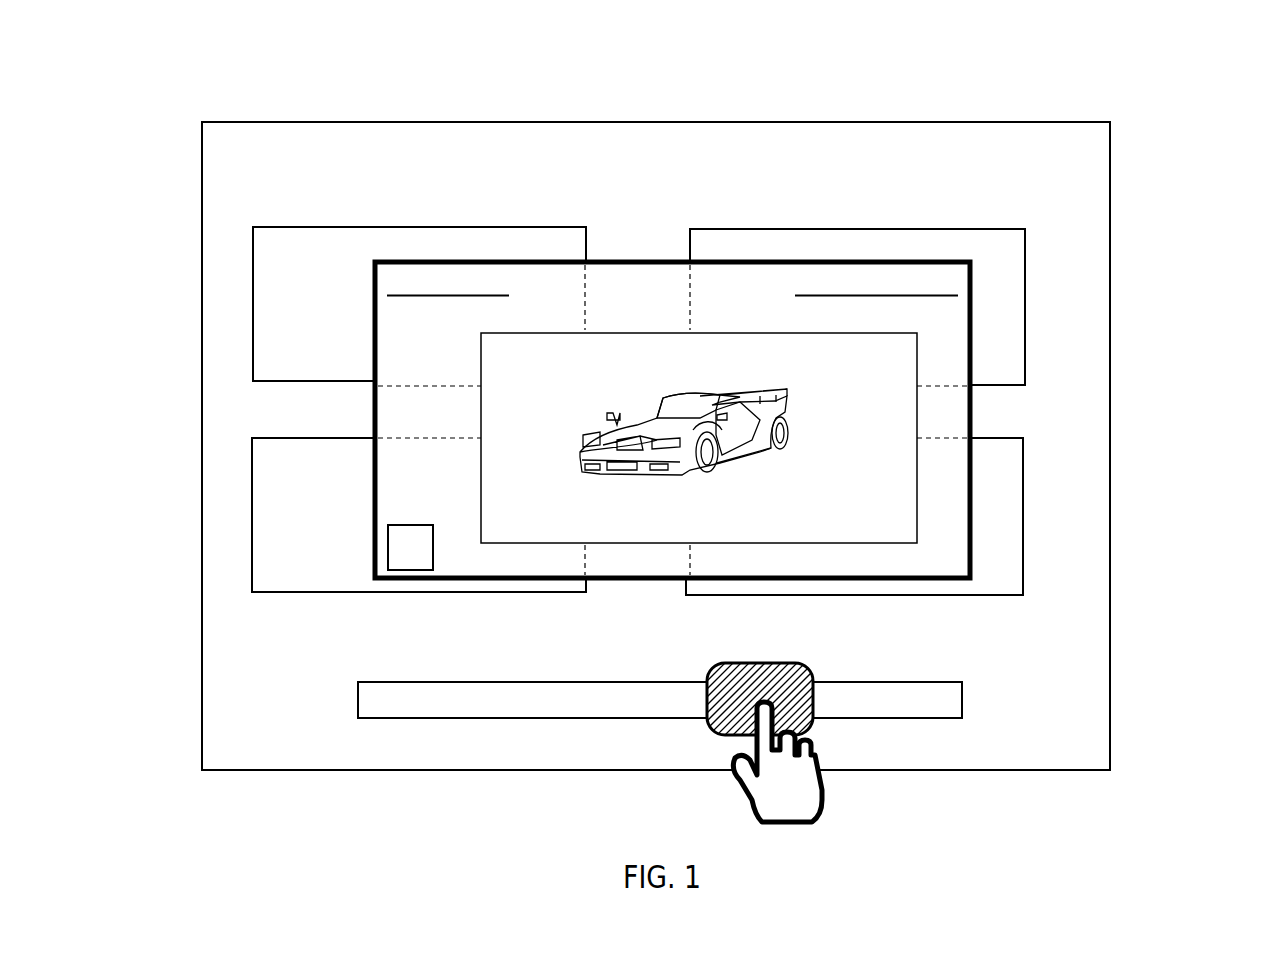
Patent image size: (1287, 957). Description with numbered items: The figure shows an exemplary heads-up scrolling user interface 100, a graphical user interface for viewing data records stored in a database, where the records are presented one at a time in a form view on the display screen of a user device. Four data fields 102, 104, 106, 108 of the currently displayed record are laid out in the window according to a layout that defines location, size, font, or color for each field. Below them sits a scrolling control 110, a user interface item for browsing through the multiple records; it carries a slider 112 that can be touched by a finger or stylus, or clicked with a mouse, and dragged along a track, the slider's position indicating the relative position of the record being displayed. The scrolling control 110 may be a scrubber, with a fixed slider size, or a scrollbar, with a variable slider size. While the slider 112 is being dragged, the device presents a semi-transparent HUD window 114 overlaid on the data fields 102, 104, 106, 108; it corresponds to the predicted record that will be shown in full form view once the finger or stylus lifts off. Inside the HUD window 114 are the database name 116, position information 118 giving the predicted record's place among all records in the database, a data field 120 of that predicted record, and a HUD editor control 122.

The heads-up scrolling user interface 100 is at (235, 122).
The data field 102 is at (420, 227).
The data field 104 is at (787, 229).
The data field 106 is at (252, 515).
The data field 108 is at (1023, 542).
The scrolling control 110 is at (428, 717).
The slider 112 is at (812, 729).
The HUD window 114 is at (970, 422).
The database name 116 is at (398, 297).
The position information 118 is at (850, 296).
The data field 120 is at (855, 528).
The HUD editor control 122 is at (388, 548).